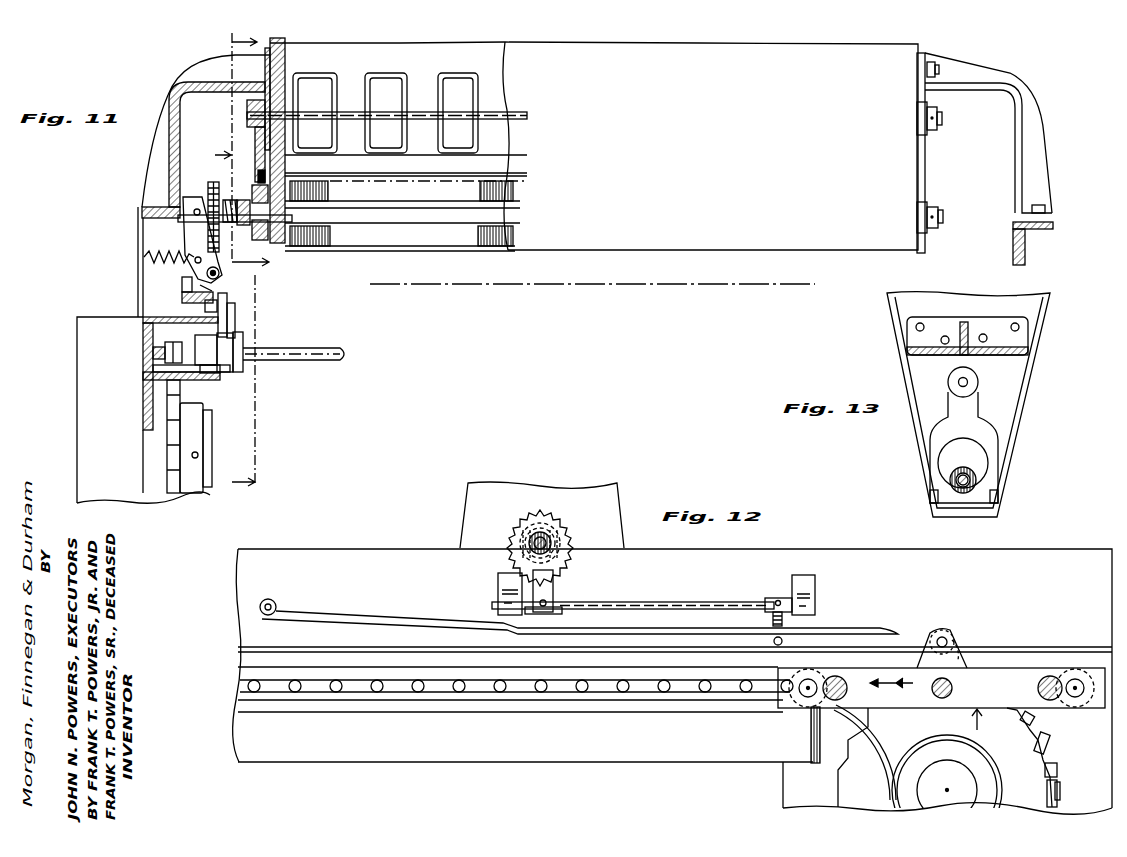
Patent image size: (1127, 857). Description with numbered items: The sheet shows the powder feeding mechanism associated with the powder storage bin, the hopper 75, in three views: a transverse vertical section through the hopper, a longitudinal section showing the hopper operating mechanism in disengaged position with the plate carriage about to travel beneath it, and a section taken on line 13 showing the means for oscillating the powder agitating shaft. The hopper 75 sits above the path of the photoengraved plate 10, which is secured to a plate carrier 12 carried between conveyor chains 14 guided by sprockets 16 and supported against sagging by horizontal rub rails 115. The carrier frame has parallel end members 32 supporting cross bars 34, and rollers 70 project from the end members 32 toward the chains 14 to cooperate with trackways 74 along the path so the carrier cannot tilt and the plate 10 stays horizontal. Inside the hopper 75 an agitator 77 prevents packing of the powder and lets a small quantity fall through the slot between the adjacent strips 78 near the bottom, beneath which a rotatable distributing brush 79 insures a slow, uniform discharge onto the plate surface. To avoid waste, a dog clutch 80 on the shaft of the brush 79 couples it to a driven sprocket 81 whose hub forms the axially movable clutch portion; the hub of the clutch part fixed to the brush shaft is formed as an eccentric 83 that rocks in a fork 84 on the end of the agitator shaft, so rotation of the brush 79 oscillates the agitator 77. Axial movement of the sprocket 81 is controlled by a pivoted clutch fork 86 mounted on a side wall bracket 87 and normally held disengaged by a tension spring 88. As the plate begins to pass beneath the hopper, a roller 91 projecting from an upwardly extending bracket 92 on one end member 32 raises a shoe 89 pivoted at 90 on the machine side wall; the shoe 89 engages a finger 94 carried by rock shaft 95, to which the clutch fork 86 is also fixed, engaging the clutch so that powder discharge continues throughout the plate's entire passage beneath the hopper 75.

In FIG. 11, the photoengraved plate 10 is at (592, 287).
In FIG. 11, the plate carrier 12 is at (225, 325).
In FIG. 12, the plate carrier 12 is at (977, 728).
In FIG. 11, the section line 13- 13 is at (250, 152).
In FIG. 11, the conveyor chain 14 is at (157, 352).
In FIG. 12, the conveyor chain 14 is at (417, 692).
In FIG. 11, the sprocket 16 is at (178, 436).
In FIG. 12, the sprocket 16 is at (1015, 772).
In FIG. 11, the end member 32 is at (242, 354).
In FIG. 12, the end member 32 is at (998, 668).
In FIG. 11, the cross bar 34 is at (332, 350).
In FIG. 12, the cross bar 34 is at (1045, 676).
In FIG. 11, the roller 70 is at (222, 373).
In FIG. 12, the roller 70 is at (1092, 668).
In FIG. 11, the trackway 74 is at (207, 382).
In FIG. 12, the trackway 74 is at (607, 712).
In FIG. 11, the hopper 75 is at (717, 131).
In FIG. 13, the hopper 75 is at (1040, 348).
In FIG. 11, the agitator 77 is at (407, 80).
In FIG. 13, the agitator 77 is at (968, 382).
In FIG. 11, the strip 78 is at (490, 167).
In FIG. 11, the distributing brush 79 is at (322, 245).
In FIG. 13, the distributing brush 79 is at (975, 480).
In FIG. 12, the distributing brush 79 is at (535, 535).
In FIG. 11, the dog clutch 80 is at (242, 228).
In FIG. 13, the dog clutch 80 is at (958, 481).
In FIG. 12, the dog clutch 80 is at (546, 538).
In FIG. 11, the sprocket 81 is at (208, 188).
In FIG. 12, the sprocket 81 is at (540, 520).
In FIG. 11, the eccentric 83 is at (285, 191).
In FIG. 13, the eccentric 83 is at (948, 461).
In FIG. 11, the fork 84 is at (266, 143).
In FIG. 13, the fork 84 is at (934, 443).
In FIG. 11, the clutch fork 86 is at (192, 229).
In FIG. 12, the clutch fork 86 is at (548, 588).
In FIG. 11, the side wall bracket 87 is at (186, 283).
In FIG. 12, the side wall bracket 87 is at (503, 580).
In FIG. 11, the tension spring 88 is at (145, 258).
In FIG. 11, the shoe 89 is at (185, 297).
In FIG. 12, the shoe 89 is at (850, 628).
In FIG. 12, the pivot 90 is at (260, 606).
In FIG. 11, the roller 91 is at (223, 310).
In FIG. 12, the roller 91 is at (948, 634).
In FIG. 11, the bracket 92 is at (229, 322).
In FIG. 12, the bracket 92 is at (962, 645).
In FIG. 11, the finger 94 is at (214, 301).
In FIG. 12, the finger 94 is at (760, 612).
In FIG. 11, the rock shaft 95 is at (202, 287).
In FIG. 12, the rock shaft 95 is at (665, 603).
In FIG. 11, the rub rail 115 is at (160, 368).
In FIG. 12, the rub rail 115 is at (535, 700).